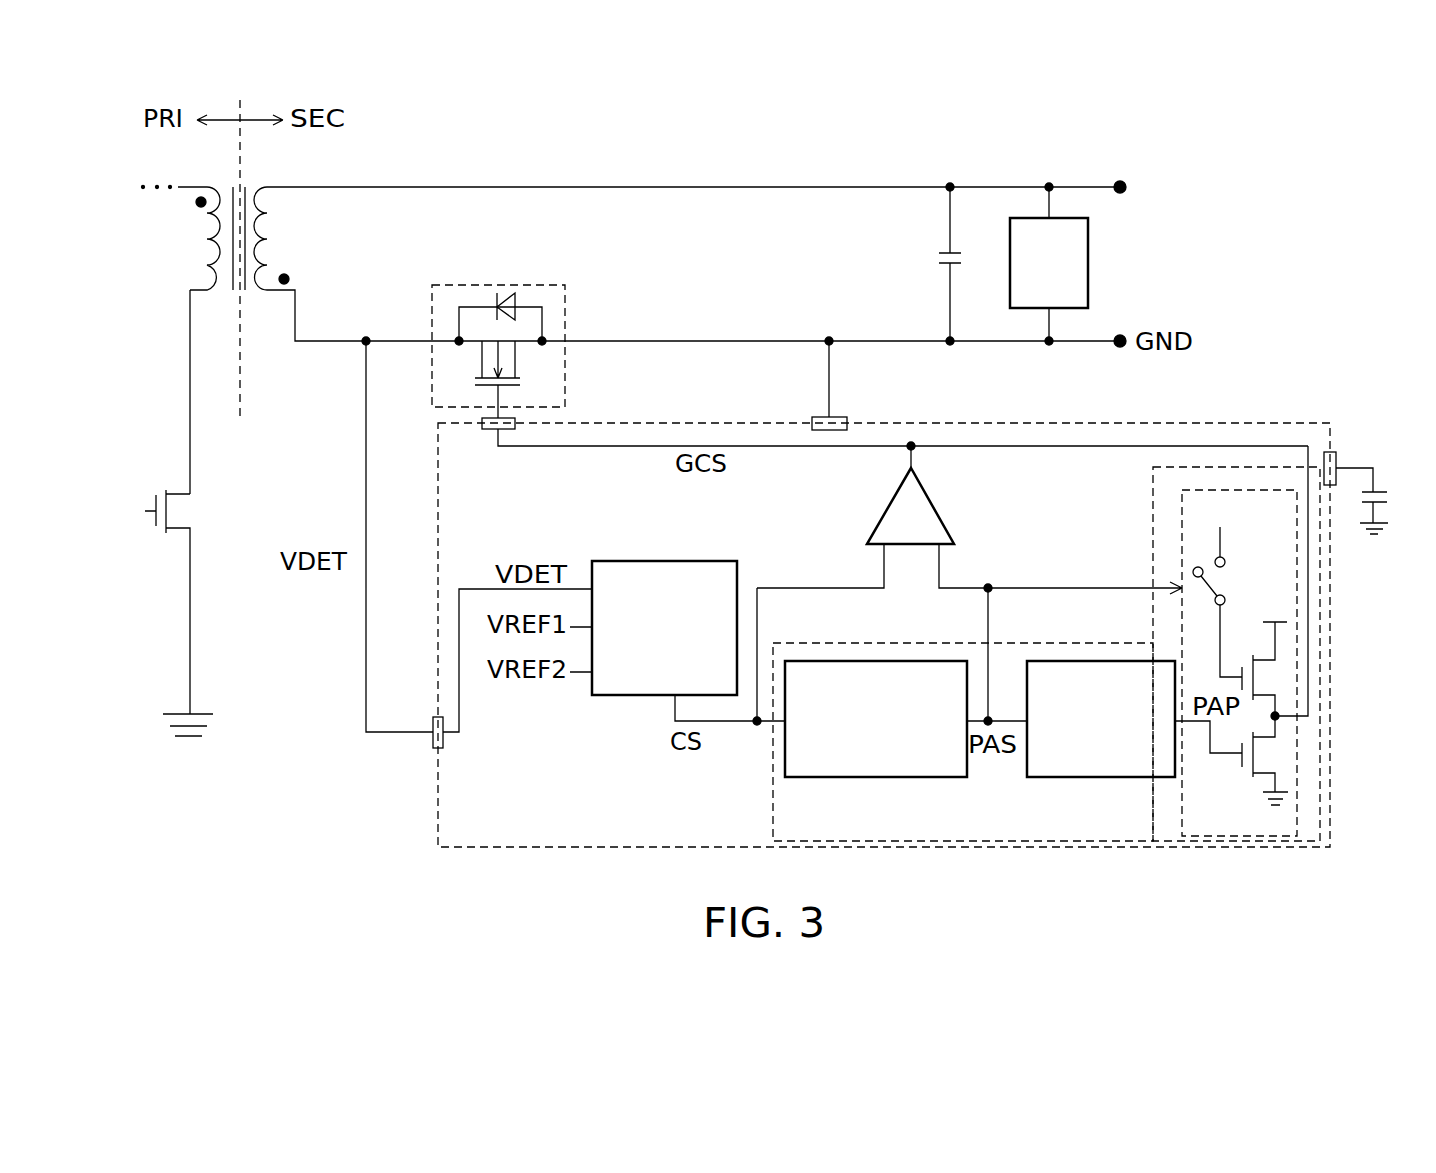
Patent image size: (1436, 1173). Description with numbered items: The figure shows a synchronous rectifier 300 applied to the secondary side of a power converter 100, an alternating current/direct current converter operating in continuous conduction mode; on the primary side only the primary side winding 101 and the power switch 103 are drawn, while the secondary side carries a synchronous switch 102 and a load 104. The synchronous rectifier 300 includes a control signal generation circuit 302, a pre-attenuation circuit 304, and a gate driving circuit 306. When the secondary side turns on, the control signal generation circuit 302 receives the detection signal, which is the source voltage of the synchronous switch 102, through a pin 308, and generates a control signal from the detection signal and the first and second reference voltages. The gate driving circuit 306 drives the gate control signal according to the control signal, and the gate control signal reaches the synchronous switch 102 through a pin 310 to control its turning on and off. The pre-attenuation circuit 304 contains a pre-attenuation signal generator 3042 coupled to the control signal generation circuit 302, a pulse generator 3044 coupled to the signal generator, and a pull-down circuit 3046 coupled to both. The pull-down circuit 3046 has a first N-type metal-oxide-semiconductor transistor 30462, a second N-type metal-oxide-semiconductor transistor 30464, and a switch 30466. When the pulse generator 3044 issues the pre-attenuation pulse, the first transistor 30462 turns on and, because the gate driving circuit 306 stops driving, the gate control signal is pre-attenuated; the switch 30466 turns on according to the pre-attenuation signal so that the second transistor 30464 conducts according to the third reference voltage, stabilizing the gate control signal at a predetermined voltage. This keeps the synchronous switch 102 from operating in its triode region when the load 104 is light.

The power converter 100 is at (1303, 192).
The primary side winding 101 is at (192, 246).
The synchronous switch 102 is at (565, 302).
The power switch 103 is at (183, 514).
The load 104 is at (1090, 266).
The synchronous rectifier 300 is at (1293, 423).
The control signal generation circuit 302 is at (678, 560).
The pre-attenuation circuit 304 is at (773, 808).
The gate driving circuit 306 is at (940, 506).
The pin 308 is at (434, 747).
The pin 310 is at (492, 432).
The pre-attenuation signal generator 3042 is at (882, 779).
The pulse generator 3044 is at (1103, 779).
The pull-down circuit 3046 is at (1248, 489).
The first N-type metal-oxide-semiconductor transistor 30462 is at (1268, 752).
The second N-type metal-oxide-semiconductor transistor 30464 is at (1268, 675).
The switch 30466 is at (1223, 578).